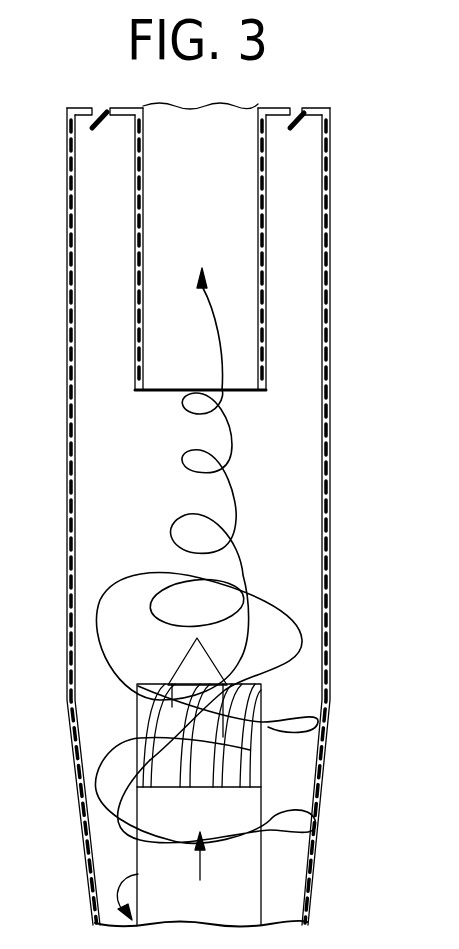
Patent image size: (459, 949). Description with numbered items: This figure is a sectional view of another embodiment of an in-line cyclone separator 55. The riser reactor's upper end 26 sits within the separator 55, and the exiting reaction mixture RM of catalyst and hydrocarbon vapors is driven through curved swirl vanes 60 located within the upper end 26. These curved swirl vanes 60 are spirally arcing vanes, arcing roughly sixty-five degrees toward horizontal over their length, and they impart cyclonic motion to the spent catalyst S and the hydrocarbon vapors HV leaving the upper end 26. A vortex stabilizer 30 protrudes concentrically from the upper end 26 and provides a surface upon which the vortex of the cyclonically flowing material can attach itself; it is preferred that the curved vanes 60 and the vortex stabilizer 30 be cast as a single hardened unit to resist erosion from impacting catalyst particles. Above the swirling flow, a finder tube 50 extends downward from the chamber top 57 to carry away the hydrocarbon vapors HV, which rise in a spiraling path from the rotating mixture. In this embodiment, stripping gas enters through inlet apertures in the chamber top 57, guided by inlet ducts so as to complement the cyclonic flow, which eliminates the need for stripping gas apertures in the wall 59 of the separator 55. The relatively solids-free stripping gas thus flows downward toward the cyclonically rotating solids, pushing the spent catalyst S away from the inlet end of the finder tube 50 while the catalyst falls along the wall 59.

The reactor upper end 26 is at (286, 784).
The vortex stabilizer 30 is at (209, 680).
The finder tube 50 is at (266, 240).
The in-line cyclone separator 55 is at (333, 413).
The chamber top 57 is at (320, 103).
The wall 59 is at (330, 507).
The curved swirl vanes 60 is at (226, 788).
The hydrocarbon vapors HV is at (203, 266).
The reaction mixture RM is at (215, 910).
The spent catalyst S is at (129, 911).